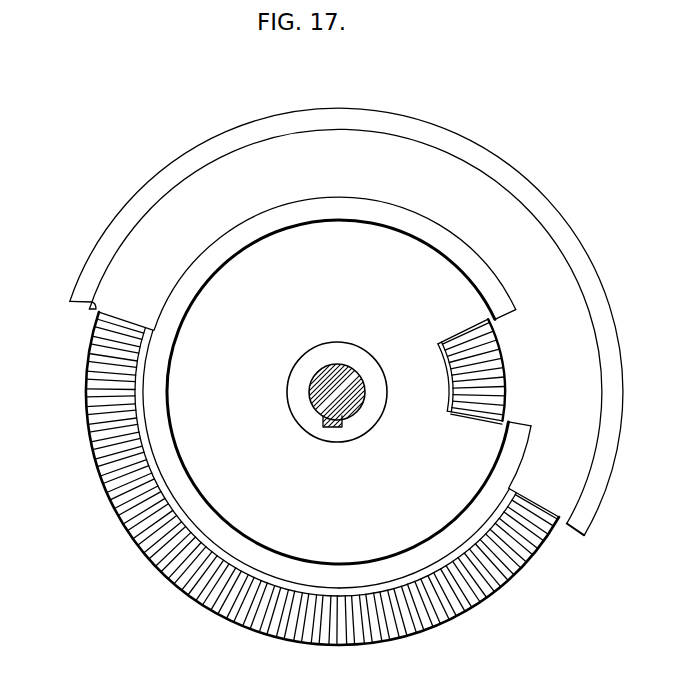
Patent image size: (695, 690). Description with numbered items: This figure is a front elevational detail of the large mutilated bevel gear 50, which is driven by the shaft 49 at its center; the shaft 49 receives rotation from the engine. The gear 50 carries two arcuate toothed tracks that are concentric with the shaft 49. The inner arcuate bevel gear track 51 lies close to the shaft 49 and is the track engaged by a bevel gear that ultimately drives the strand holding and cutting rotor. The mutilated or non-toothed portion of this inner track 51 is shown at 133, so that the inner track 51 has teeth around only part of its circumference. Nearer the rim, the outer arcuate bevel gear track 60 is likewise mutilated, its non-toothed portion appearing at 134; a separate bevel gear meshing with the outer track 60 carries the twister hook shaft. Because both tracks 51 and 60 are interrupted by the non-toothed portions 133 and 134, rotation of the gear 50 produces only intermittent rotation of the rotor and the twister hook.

The non-toothed portion 134 is at (180, 168).
The non-toothed portion 133 is at (410, 227).
The outer arcuate bevel gear track 60 is at (122, 495).
The large mutilated bevel gear 50 is at (478, 605).
The inner arcuate bevel gear track 51 is at (473, 397).
The shaft 49 is at (320, 382).